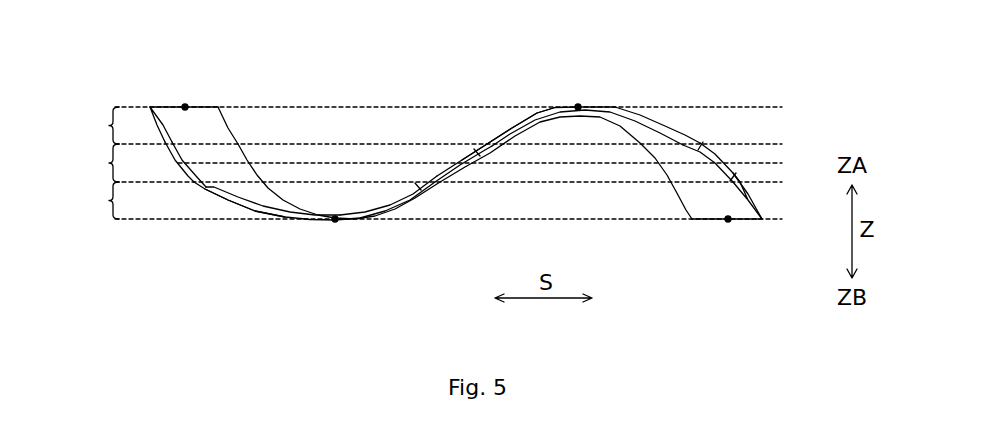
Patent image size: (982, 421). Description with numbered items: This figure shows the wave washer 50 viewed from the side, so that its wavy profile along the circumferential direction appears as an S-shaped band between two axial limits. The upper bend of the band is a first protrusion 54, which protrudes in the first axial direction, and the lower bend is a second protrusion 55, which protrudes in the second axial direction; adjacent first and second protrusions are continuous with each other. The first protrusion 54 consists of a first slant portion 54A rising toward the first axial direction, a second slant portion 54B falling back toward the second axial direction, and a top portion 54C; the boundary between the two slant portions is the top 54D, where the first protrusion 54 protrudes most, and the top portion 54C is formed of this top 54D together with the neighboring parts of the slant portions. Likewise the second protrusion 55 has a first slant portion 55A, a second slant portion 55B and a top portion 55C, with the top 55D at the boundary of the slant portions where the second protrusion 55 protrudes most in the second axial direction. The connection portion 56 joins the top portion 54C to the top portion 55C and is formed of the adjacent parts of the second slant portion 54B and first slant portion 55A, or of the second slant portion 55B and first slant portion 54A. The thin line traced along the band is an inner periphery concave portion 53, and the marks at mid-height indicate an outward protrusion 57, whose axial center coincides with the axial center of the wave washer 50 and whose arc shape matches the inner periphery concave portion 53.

The wave washer 50 is at (757, 67).
The inner periphery concave portion 53 is at (247, 151).
The first protrusion 54 is at (206, 104).
The first slant portion 54A is at (497, 132).
The second slant portion 54B is at (226, 126).
The top portion 54C is at (184, 105).
The top 54D is at (417, 125).
The second protrusion 55 is at (380, 222).
The first slant portion 55A is at (247, 208).
The second slant portion 55B is at (397, 200).
The top portion 55C is at (335, 224).
The top 55D is at (418, 200).
The connection portion 56 is at (427, 164).
The outward protrusion 57 is at (436, 170).